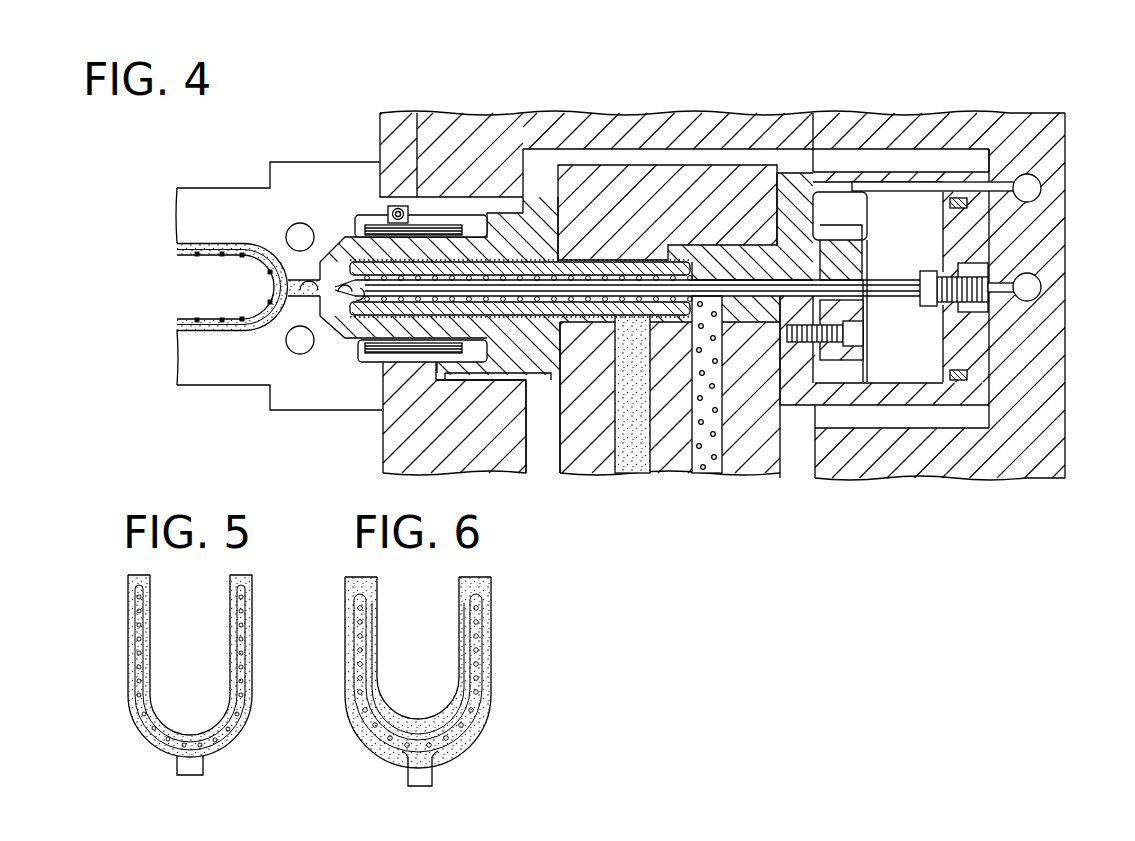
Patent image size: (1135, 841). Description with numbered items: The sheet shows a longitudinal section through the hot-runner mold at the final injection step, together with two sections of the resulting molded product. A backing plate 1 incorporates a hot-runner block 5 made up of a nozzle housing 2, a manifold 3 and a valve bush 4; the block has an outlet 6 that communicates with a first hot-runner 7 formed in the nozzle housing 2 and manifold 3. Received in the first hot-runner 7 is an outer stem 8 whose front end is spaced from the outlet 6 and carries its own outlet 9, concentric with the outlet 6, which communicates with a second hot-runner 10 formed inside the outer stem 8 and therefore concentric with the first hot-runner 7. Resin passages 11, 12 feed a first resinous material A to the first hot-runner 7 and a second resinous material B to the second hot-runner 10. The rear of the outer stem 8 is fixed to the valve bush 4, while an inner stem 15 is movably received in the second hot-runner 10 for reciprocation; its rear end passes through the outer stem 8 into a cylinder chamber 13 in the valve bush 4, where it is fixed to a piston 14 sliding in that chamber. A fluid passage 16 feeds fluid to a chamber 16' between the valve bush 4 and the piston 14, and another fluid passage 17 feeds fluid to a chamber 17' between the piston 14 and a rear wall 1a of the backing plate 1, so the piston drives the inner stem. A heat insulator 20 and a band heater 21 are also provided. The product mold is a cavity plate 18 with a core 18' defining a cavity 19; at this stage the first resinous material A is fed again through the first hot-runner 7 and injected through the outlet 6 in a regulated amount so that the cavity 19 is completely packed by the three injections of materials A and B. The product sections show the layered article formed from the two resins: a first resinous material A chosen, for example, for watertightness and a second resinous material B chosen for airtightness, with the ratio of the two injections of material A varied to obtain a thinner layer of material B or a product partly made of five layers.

In FIG. 4, the backing plate 1 is at (382, 463).
In FIG. 4, the rear wall 1a is at (1065, 412).
In FIG. 4, the nozzle housing 2 is at (543, 383).
In FIG. 4, the manifold 3 is at (780, 478).
In FIG. 4, the valve bush 4 is at (797, 405).
In FIG. 4, the hot-runner block 5 is at (557, 484).
In FIG. 4, the outlet 6 is at (310, 300).
In FIG. 4, the first hot-runner 7 is at (526, 324).
In FIG. 4, the outer stem 8 is at (655, 260).
In FIG. 4, the outlet 9 is at (340, 300).
In FIG. 4, the second hot-runner 10 is at (609, 278).
In FIG. 4, the resin passage 11 is at (632, 478).
In FIG. 4, the resin passage 12 is at (706, 478).
In FIG. 4, the cylinder chamber 13 is at (852, 197).
In FIG. 4, the piston 14 is at (945, 343).
In FIG. 4, the inner stem 15 is at (793, 285).
In FIG. 4, the fluid passage 16 is at (980, 186).
In FIG. 4, the chamber 16' is at (901, 155).
In FIG. 4, the fluid passage 17 is at (1048, 284).
In FIG. 4, the chamber 17' is at (1017, 298).
In FIG. 4, the cavity plate 18 is at (279, 277).
In FIG. 4, the core 18' is at (219, 287).
In FIG. 4, the cavity 19 is at (200, 286).
In FIG. 4, the heat insulator 20 is at (306, 270).
In FIG. 4, the band heater 21 is at (360, 214).
In FIG. 4, the first resinous material A is at (625, 415).
In FIG. 5, the first resinous material A is at (230, 676).
In FIG. 6, the first resinous material A is at (345, 661).
In FIG. 4, the second resinous material B is at (712, 420).
In FIG. 5, the second resinous material B is at (245, 616).
In FIG. 6, the second resinous material B is at (351, 700).